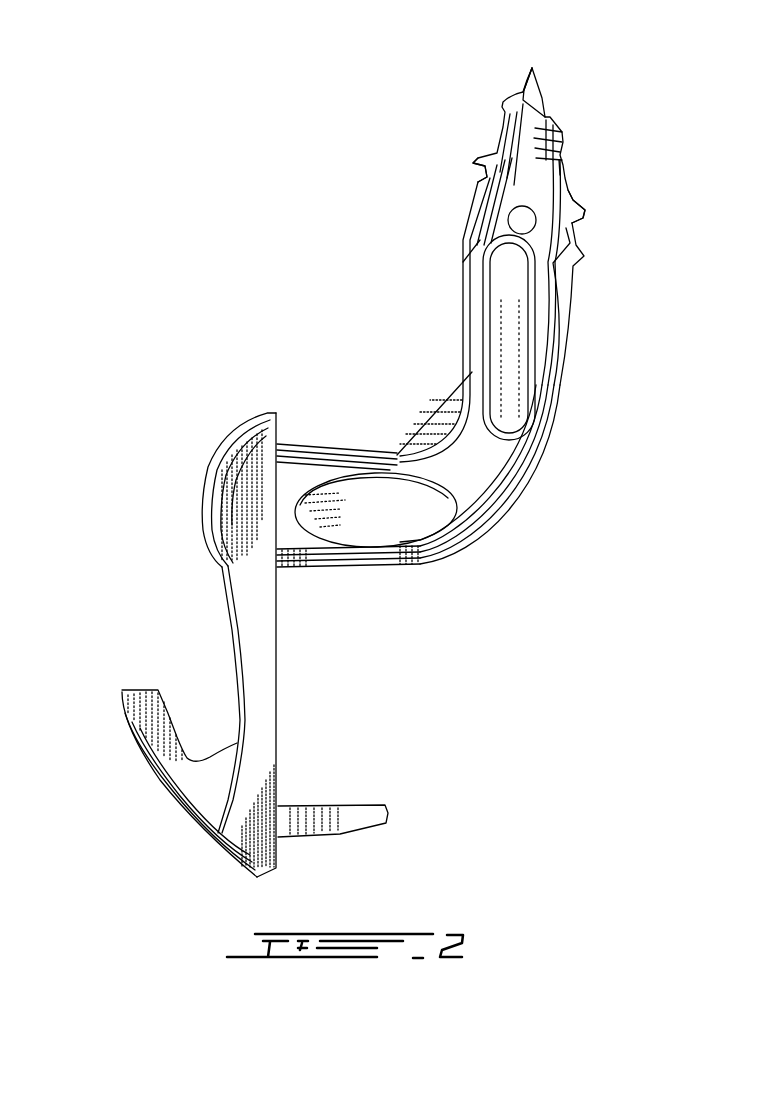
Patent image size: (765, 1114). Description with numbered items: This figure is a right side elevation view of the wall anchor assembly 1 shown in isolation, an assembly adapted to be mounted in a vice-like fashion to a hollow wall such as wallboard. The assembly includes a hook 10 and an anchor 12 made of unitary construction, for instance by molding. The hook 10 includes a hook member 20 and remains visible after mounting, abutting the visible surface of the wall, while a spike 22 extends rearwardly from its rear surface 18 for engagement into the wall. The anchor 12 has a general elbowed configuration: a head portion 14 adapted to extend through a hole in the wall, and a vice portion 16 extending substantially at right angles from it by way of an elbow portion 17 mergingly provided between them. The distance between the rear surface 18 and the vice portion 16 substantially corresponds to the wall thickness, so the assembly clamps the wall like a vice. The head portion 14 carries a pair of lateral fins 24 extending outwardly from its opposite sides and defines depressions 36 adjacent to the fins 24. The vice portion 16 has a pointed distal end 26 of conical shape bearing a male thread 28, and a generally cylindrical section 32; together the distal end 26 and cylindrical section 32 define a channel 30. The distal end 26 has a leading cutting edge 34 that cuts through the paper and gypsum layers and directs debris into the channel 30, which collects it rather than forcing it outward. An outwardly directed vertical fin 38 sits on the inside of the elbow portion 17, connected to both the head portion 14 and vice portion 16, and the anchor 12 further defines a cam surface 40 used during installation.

The hook assembly 1 is at (328, 176).
The hook 10 is at (222, 565).
The anchor 12 is at (585, 257).
The head portion 14 is at (318, 447).
The vice portion 16 is at (566, 350).
The elbow portion 17 is at (517, 482).
The rear surface 18 is at (275, 698).
The hook member 20 is at (130, 710).
The spike 22 is at (386, 814).
The lateral fins 24 is at (400, 556).
The pointed distal end 26 is at (525, 80).
The male thread 28 is at (586, 204).
The channel 30 is at (500, 222).
The cylindrical section 32 is at (470, 300).
The leading cutting edge 34 is at (567, 150).
The depressions 36 is at (350, 526).
The vertical fin 38 is at (440, 445).
The cam surface 40 is at (470, 552).